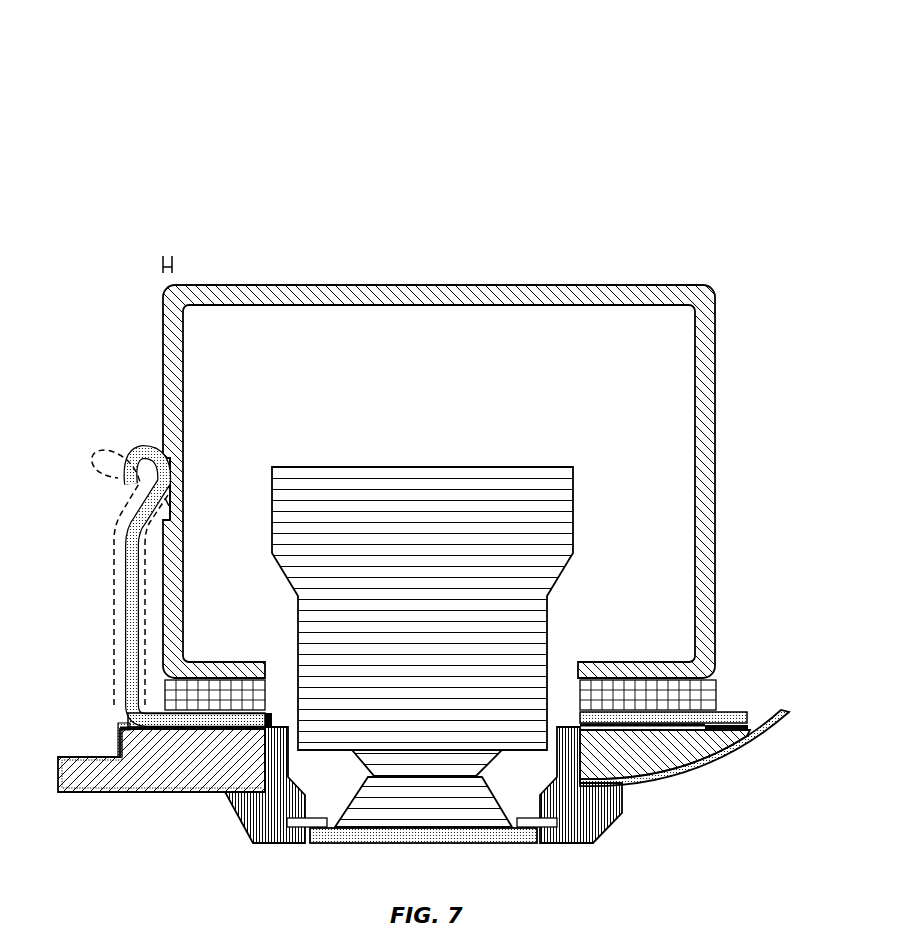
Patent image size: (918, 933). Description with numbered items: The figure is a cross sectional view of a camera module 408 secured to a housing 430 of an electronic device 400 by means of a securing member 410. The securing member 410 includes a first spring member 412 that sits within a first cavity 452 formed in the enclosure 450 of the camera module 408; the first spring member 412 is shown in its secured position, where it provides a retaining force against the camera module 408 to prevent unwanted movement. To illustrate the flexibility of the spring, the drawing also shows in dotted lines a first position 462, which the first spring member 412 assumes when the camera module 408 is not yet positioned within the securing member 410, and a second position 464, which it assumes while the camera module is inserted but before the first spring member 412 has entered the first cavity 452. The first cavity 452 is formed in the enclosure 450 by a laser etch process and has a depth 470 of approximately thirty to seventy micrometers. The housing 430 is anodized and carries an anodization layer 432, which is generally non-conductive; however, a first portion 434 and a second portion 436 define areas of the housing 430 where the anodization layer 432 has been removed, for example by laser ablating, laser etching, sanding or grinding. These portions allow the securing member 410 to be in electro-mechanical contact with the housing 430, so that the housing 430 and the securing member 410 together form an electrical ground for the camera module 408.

The electronic device 400 is at (119, 94).
The camera module 408 is at (404, 206).
The securing member 410 is at (100, 694).
The first spring member 412 is at (95, 405).
The housing 430 is at (692, 777).
The anodization layer 432 is at (118, 752).
The first portion 434 is at (120, 731).
The second portion 436 is at (718, 732).
The enclosure 450 is at (592, 284).
The first cavity 452 is at (154, 447).
The first position 462 is at (137, 450).
The second position 464 is at (104, 478).
The depth 470 is at (168, 258).